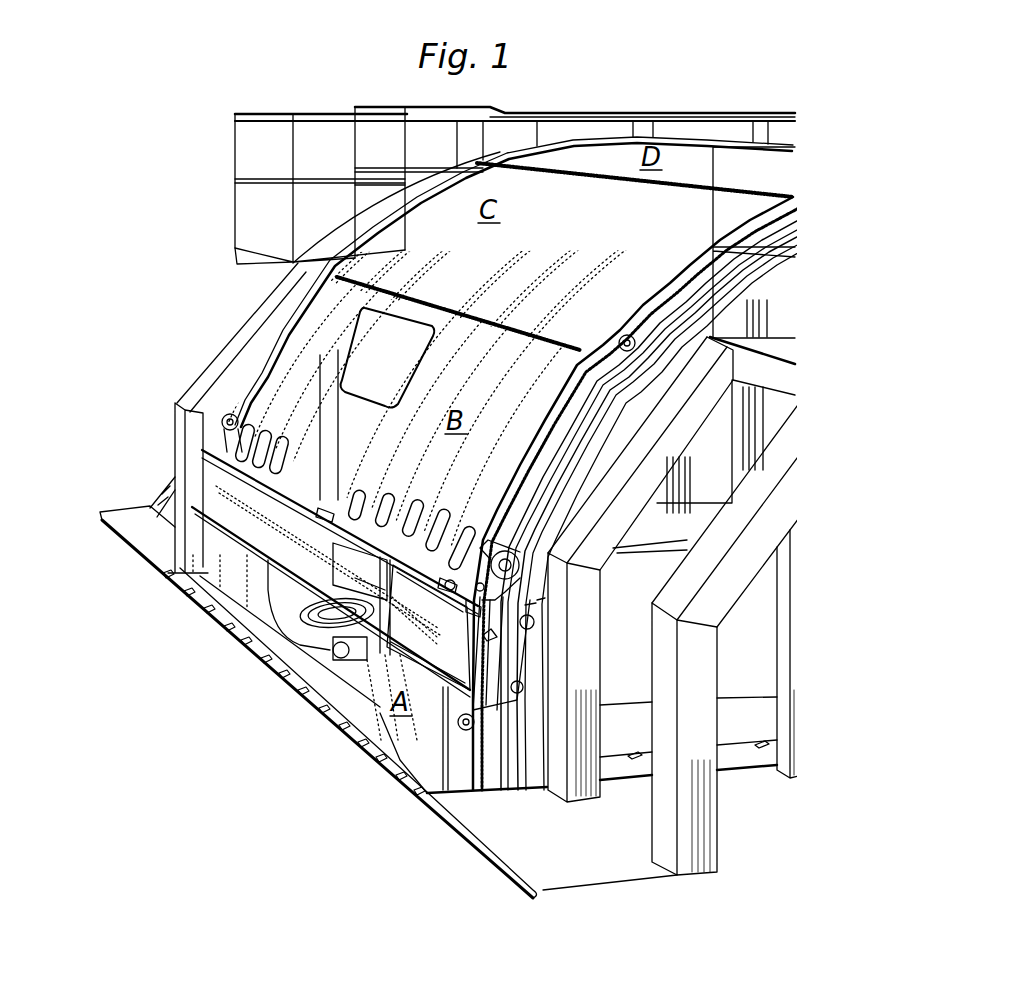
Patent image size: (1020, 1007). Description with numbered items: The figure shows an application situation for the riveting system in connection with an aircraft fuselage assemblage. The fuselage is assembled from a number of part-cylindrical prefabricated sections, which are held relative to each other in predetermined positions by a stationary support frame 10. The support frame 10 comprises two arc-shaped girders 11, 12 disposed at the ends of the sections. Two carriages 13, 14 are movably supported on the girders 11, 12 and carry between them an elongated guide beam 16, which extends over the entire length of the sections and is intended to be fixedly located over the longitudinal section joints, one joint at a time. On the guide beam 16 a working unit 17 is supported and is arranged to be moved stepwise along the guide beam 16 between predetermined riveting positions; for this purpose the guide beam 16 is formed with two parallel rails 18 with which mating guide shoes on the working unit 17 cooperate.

The stationary support frame 10 is at (588, 597).
The arc-shaped girder 11 is at (690, 320).
The arc-shaped girder 12 is at (263, 347).
The carriage 13 is at (518, 633).
The carriage 14 is at (207, 452).
The guide beam 16 is at (316, 566).
The working unit 17 is at (318, 637).
The rails 18 is at (320, 513).